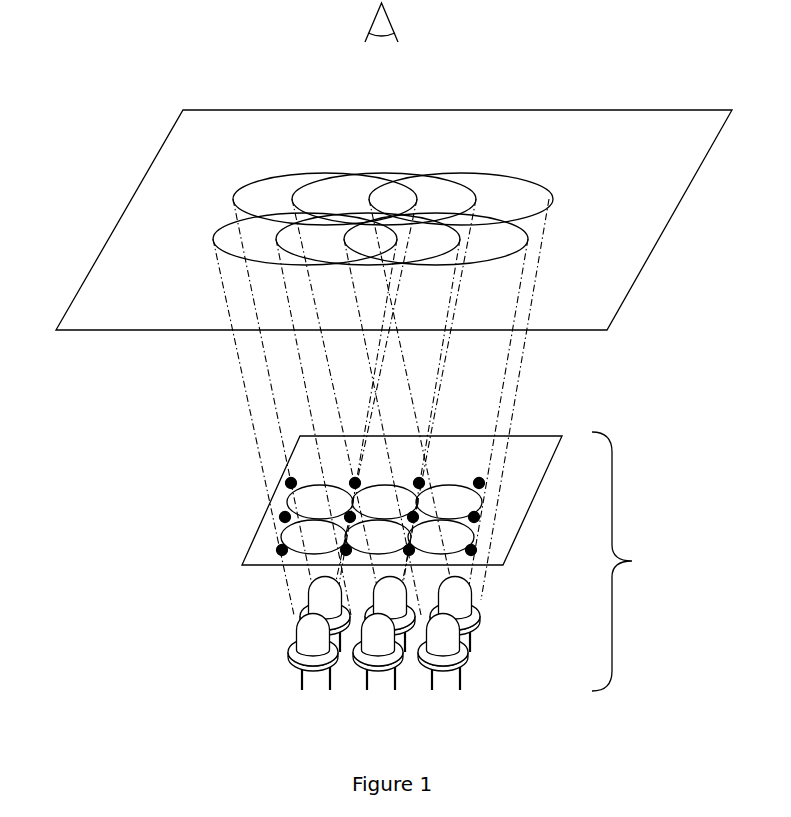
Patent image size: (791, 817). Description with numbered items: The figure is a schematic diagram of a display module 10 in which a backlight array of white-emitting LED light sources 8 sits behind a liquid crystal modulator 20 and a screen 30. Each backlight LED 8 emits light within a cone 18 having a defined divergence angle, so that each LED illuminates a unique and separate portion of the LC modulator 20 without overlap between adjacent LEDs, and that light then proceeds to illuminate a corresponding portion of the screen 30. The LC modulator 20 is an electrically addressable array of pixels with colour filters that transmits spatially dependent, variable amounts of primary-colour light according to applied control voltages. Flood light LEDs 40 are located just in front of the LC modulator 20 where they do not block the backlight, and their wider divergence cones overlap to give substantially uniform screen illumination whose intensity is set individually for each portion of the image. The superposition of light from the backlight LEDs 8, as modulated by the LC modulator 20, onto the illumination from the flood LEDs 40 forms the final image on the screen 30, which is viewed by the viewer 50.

The backlight array LED light sources 8 is at (262, 645).
The display module 10 is at (630, 561).
The cone 18 is at (242, 397).
The liquid crystal modulator 20 is at (240, 553).
The screen 30 is at (120, 209).
The flood light LEDs 40 is at (282, 513).
The viewer 50 is at (393, 23).